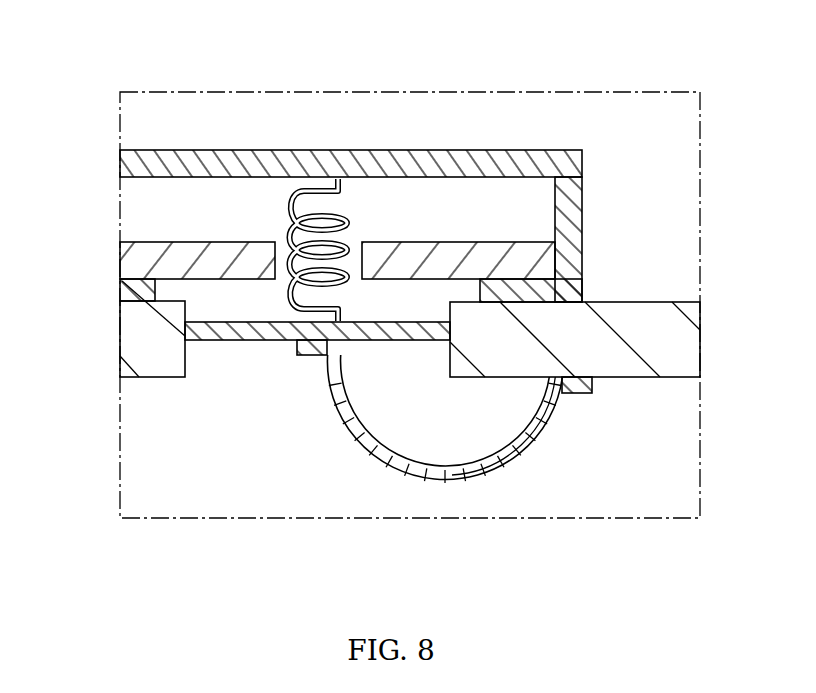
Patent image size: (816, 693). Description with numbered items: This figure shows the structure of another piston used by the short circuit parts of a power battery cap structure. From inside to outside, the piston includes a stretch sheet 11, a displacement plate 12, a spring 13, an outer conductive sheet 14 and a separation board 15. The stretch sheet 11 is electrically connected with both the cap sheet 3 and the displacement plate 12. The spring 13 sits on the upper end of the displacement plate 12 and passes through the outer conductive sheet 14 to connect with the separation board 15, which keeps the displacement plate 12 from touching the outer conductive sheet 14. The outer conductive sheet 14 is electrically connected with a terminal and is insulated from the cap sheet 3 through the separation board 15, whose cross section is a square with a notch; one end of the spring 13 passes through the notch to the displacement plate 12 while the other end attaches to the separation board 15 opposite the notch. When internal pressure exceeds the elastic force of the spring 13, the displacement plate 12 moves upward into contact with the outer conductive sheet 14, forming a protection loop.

The cap sheet 3 is at (652, 313).
The stretch sheet 11 is at (443, 485).
The displacement plate 12 is at (235, 342).
The spring 13 is at (348, 221).
The outer conductive sheet 14 is at (193, 242).
The separation board 15 is at (510, 151).